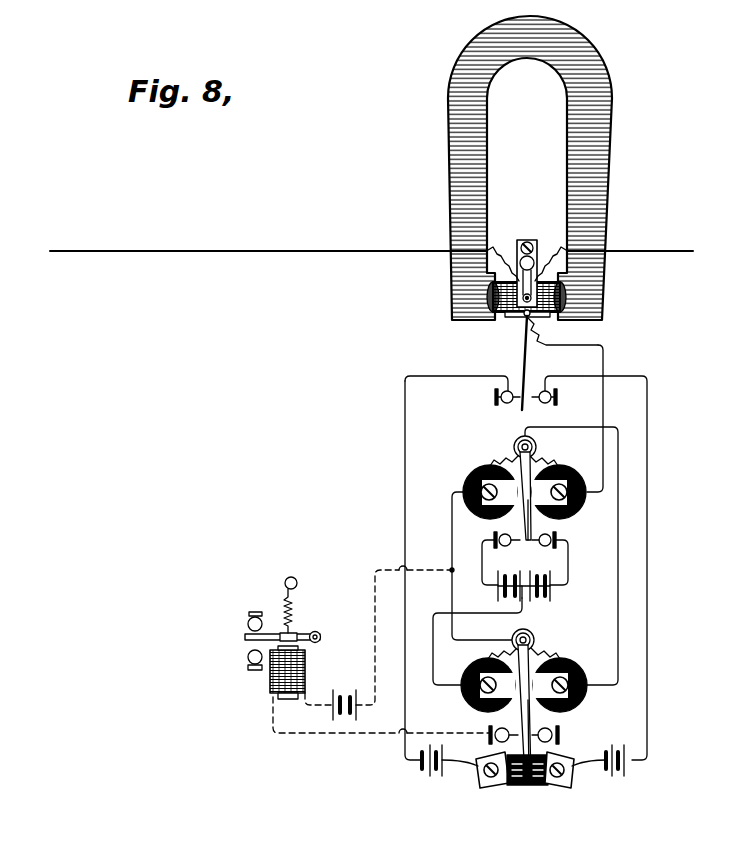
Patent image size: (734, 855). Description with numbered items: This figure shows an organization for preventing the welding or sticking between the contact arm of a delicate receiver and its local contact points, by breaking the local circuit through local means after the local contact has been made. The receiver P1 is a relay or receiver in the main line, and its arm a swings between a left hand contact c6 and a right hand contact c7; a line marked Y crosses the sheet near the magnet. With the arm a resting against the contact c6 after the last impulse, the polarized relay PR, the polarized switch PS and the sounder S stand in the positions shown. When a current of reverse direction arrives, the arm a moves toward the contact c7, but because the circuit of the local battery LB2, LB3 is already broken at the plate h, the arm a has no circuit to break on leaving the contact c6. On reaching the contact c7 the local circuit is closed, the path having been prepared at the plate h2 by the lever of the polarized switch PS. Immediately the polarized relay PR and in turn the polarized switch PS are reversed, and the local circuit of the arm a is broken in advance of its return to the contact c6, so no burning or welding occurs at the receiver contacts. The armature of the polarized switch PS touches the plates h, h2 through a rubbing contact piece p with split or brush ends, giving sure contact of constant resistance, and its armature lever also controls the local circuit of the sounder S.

The receiver P1 is at (530, 168).
The arm a is at (521, 348).
The left hand contact c6 is at (492, 397).
The right hand contact c7 is at (557, 397).
The polarized relay PR is at (521, 518).
The polarized switch PS is at (524, 703).
The sounder S is at (305, 666).
The local battery LB2 is at (443, 777).
The local battery LB3 is at (606, 777).
The contact plate h is at (496, 774).
The rubbing contact piece p is at (522, 776).
The contact plate h2 is at (559, 781).
The line Y is at (371, 197).